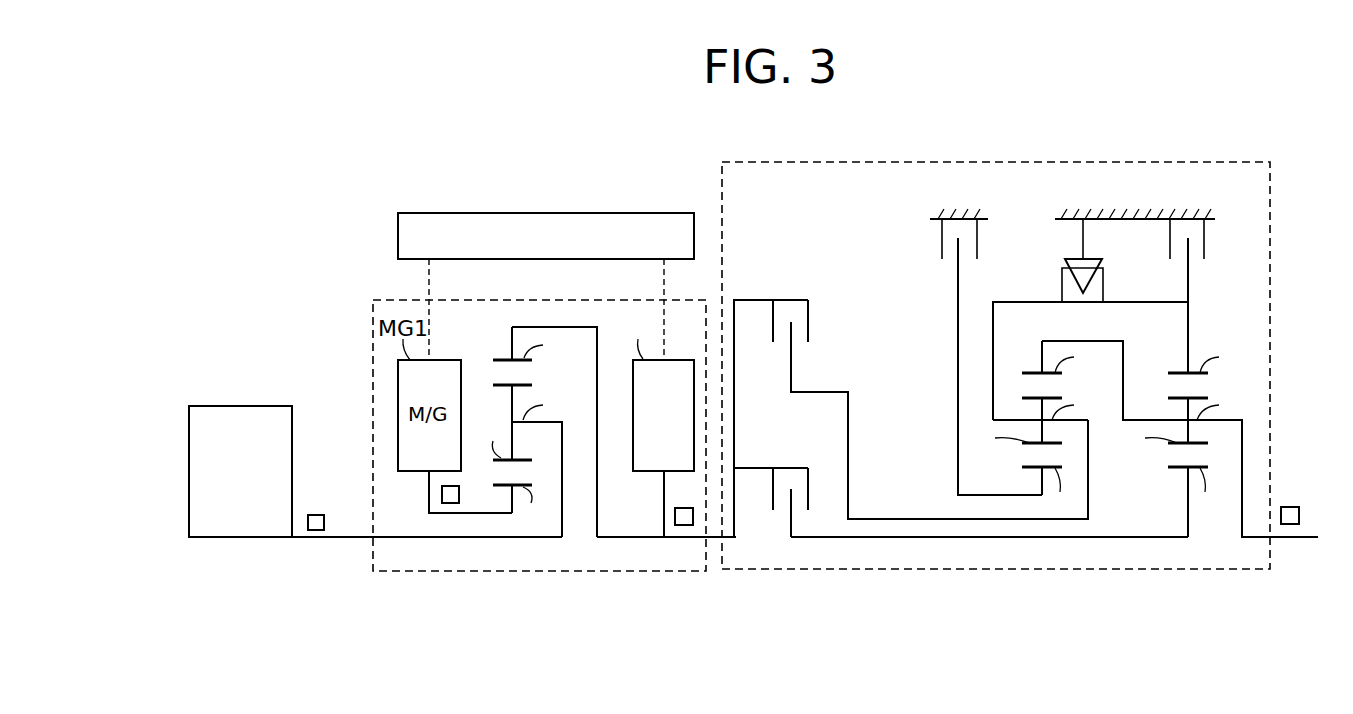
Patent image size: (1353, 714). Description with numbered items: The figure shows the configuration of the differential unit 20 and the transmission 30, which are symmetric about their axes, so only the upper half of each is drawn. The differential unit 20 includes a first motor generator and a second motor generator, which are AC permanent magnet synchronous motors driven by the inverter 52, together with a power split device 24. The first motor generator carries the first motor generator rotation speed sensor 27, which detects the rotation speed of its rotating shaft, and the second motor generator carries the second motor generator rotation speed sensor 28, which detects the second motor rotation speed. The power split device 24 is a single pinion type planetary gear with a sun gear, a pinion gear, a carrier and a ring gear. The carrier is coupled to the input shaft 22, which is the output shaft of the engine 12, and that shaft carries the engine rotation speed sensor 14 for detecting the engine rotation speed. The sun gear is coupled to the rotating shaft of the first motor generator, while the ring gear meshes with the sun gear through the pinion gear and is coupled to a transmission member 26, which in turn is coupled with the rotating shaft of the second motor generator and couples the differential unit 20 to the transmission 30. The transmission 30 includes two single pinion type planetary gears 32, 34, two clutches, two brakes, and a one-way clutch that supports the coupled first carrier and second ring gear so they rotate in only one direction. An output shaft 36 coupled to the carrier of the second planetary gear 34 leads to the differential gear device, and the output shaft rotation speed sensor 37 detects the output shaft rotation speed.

The engine 12 is at (253, 406).
The engine rotation speed sensor 14 is at (316, 515).
The differential unit 20 is at (597, 300).
The input shaft 22 is at (336, 539).
The power split device 24 is at (511, 541).
The transmission member 26 is at (688, 540).
The MG1 rotation speed sensor 27 is at (442, 494).
The MG2 rotation speed sensor 28 is at (675, 518).
The transmission 30 is at (1210, 162).
The planetary gear 32 is at (1050, 541).
The planetary gear 34 is at (1198, 541).
The output shaft 36 is at (1300, 538).
The output shaft rotation speed sensor 37 is at (1299, 515).
The inverter 52 is at (650, 212).